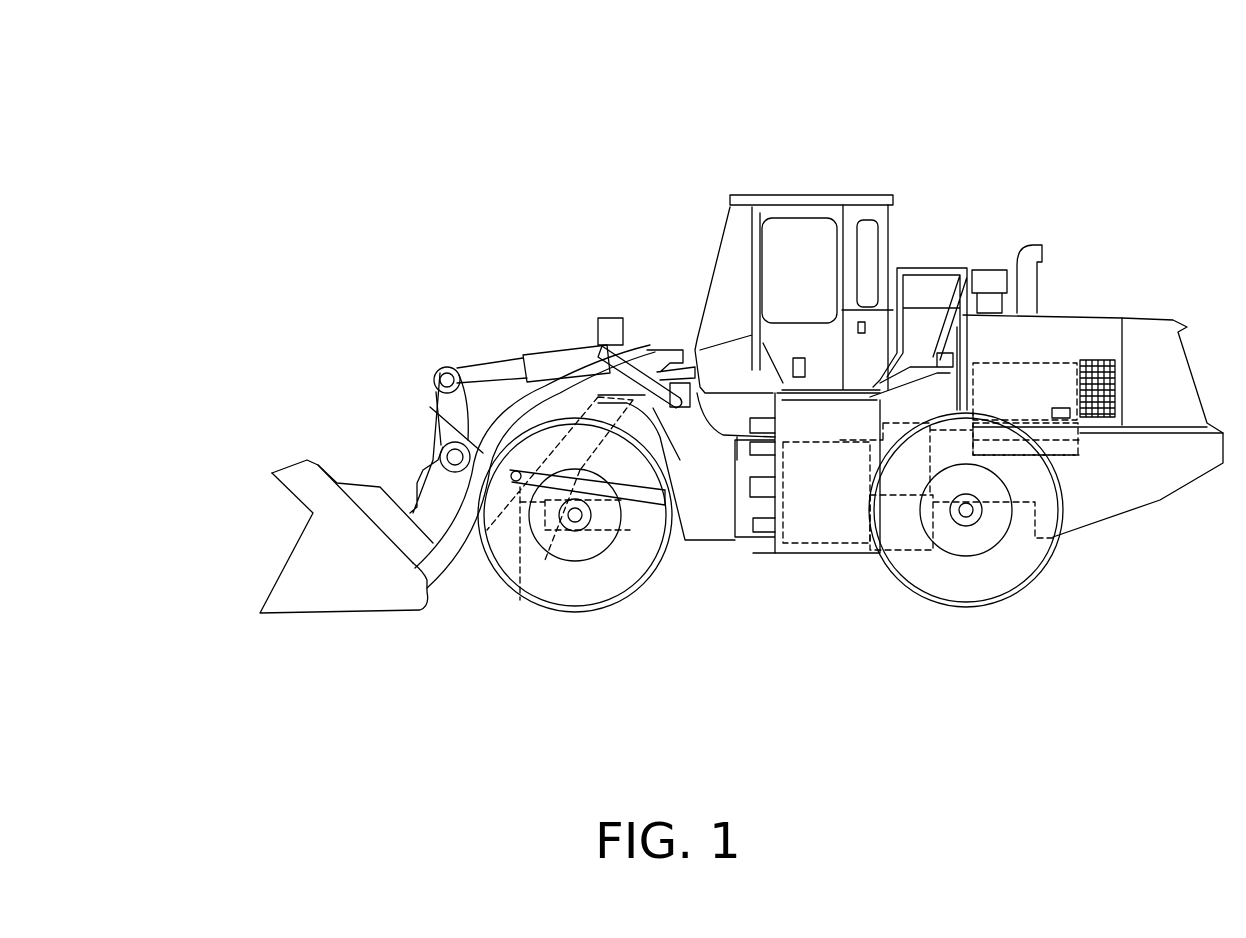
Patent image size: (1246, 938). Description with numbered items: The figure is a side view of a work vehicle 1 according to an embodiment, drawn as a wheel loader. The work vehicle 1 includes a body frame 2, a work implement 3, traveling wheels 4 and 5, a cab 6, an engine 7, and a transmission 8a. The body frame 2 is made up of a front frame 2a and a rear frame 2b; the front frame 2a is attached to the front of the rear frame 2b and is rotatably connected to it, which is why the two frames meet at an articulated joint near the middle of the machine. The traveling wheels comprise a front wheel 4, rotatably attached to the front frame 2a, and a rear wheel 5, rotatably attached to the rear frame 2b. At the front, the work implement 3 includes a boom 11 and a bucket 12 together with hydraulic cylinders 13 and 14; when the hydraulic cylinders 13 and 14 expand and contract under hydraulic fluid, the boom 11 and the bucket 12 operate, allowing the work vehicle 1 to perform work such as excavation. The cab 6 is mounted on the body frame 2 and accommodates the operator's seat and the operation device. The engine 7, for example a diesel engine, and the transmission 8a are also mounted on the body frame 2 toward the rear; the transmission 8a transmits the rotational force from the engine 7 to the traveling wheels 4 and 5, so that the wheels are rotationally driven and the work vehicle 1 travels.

The work vehicle 1 is at (1018, 107).
The body frame 2 is at (810, 653).
The front frame 2a is at (715, 535).
The rear frame 2b is at (790, 553).
The work implement 3 is at (323, 433).
The front wheel 4 is at (588, 597).
The rear wheel 5 is at (977, 590).
The cab 6 is at (858, 195).
The engine 7 is at (1057, 360).
The transmission 8a is at (840, 543).
The boom 11 is at (483, 453).
The bucket 12 is at (305, 550).
The hydraulic cylinder 13 is at (522, 593).
The hydraulic cylinder 14 is at (540, 356).